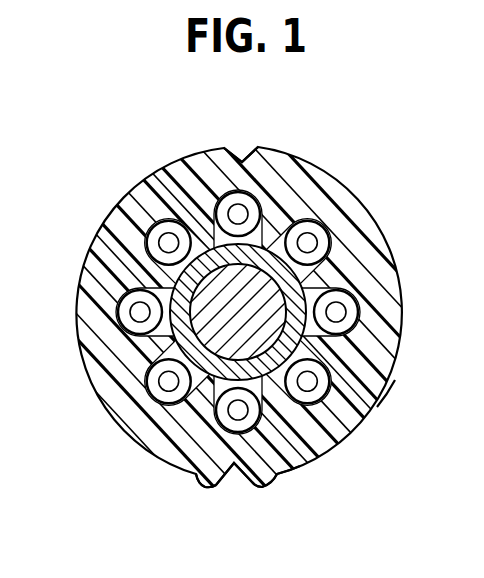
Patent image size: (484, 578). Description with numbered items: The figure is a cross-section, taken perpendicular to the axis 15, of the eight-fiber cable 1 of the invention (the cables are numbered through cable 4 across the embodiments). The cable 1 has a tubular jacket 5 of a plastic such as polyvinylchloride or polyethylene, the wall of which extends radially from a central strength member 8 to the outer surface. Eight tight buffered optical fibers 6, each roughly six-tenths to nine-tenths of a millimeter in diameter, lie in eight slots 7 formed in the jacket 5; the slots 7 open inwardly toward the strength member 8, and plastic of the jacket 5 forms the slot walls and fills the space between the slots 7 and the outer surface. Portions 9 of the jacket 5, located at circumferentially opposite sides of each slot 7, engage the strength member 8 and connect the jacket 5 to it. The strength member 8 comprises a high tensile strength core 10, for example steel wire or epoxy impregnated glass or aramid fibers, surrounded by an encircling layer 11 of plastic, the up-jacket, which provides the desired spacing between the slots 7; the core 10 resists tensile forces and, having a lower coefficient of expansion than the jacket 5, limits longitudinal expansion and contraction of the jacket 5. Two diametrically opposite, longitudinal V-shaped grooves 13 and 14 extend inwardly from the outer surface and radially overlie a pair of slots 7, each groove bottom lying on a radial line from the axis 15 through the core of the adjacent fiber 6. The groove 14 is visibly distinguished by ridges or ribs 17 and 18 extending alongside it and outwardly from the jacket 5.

The cable 1 is at (242, 309).
The cable 4 is at (238, 309).
The tubular jacket 5 is at (305, 167).
The tight buffered optical fibers 6 is at (232, 194).
The slots 7 is at (217, 231).
The strength member 8 is at (293, 467).
The portions 9 is at (160, 282).
The core 10 is at (377, 407).
The encircling layer of plastic 11 is at (292, 338).
The V-shaped groove 13 is at (243, 160).
The V-shaped groove 14 is at (235, 468).
The axis 15 is at (246, 316).
The ridge or rib 17 is at (203, 484).
The ridge or rib 18 is at (270, 486).